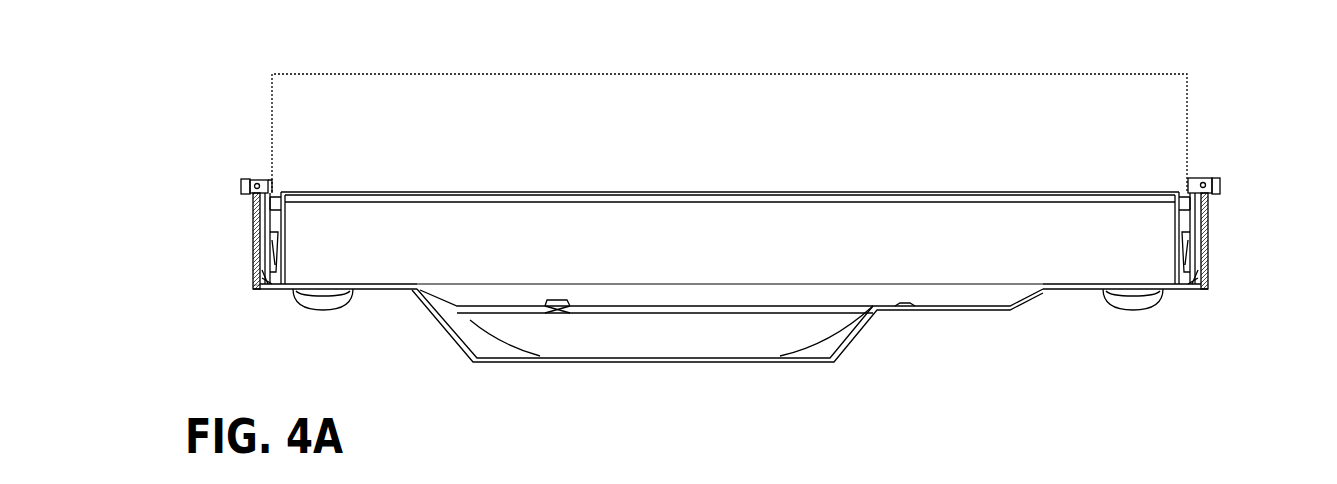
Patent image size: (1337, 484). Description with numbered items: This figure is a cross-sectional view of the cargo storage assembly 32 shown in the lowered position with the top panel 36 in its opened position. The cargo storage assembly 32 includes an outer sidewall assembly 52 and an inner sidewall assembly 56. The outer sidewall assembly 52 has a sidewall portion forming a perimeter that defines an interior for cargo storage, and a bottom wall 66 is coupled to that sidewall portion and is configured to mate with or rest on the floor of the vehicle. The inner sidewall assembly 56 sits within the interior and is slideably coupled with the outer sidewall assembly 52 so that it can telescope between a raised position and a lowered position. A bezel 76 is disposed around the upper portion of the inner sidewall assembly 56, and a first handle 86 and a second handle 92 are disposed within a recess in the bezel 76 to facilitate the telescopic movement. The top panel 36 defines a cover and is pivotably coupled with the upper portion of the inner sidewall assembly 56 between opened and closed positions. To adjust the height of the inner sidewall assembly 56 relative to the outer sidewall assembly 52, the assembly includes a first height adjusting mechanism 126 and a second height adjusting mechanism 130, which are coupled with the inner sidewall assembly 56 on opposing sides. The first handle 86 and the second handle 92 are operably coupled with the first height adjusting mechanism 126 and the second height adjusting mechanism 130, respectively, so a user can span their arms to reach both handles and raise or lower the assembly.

The cargo storage assembly 32 is at (256, 56).
The top panel 36 is at (712, 112).
The outer sidewall assembly 52 is at (253, 232).
The inner sidewall assembly 56 is at (252, 274).
The bottom wall 66 is at (453, 318).
The bezel 76 is at (242, 186).
The first handle 86 is at (268, 179).
The second handle 92 is at (1203, 178).
The first height adjusting mechanism 126 is at (283, 238).
The second height adjusting mechanism 130 is at (1219, 227).